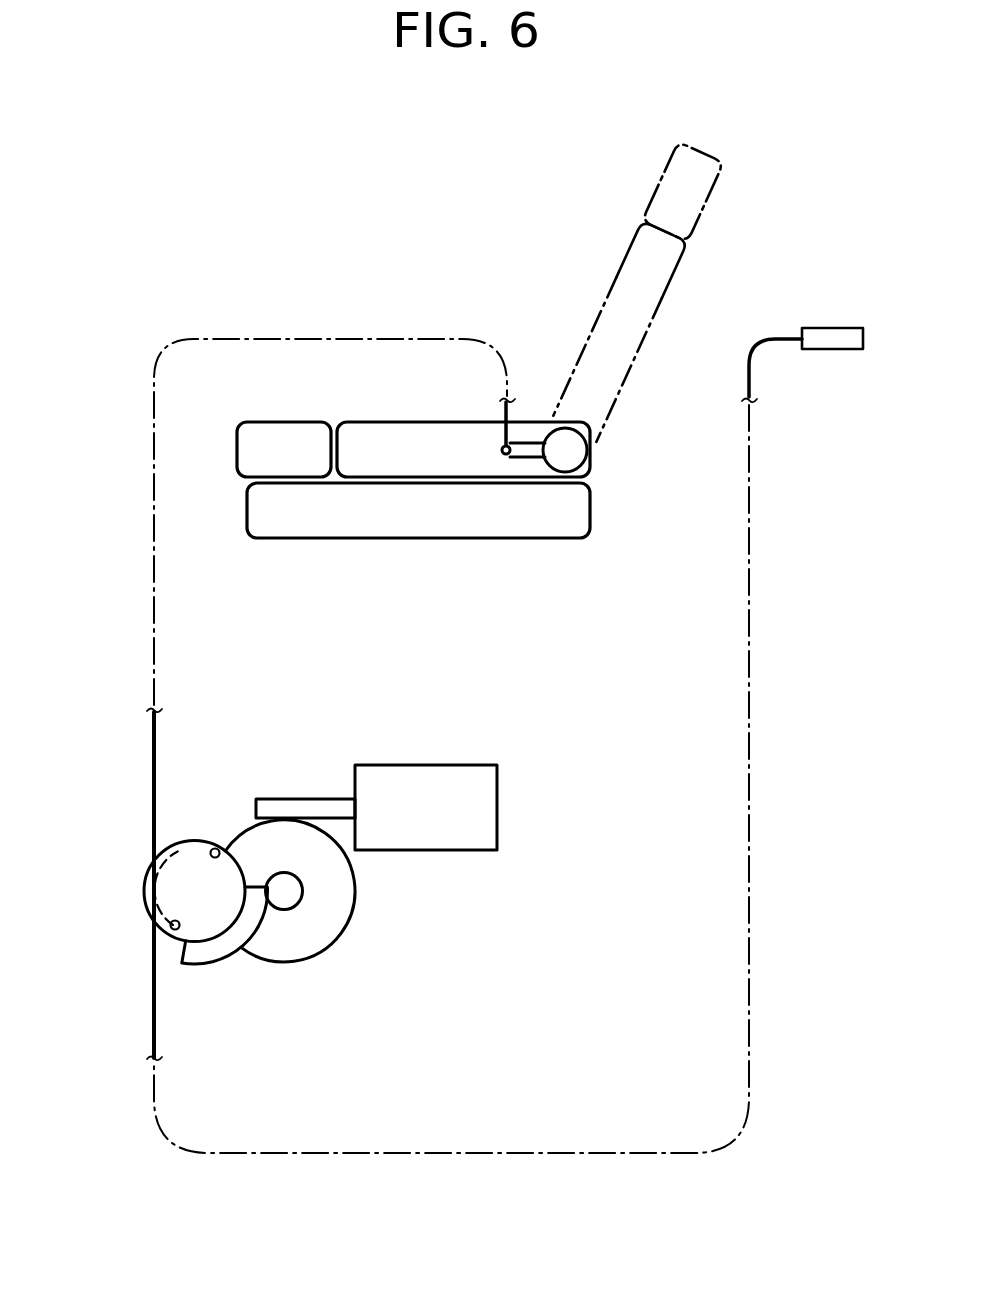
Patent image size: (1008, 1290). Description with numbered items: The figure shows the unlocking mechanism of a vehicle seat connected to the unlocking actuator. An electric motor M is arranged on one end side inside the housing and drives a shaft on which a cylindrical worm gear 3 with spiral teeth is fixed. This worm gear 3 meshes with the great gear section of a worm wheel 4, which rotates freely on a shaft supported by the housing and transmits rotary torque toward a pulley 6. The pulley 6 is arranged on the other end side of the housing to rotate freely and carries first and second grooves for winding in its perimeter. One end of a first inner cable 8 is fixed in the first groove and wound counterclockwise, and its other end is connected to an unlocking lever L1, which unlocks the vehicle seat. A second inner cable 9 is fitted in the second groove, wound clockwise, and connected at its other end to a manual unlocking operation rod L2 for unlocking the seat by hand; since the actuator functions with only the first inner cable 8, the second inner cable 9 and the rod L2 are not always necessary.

The worm gear 3 is at (310, 808).
The worm wheel 4 is at (303, 933).
The pulley 6 is at (193, 888).
The first inner cable 8 is at (154, 797).
The second inner cable 9 is at (154, 973).
The motor M is at (432, 822).
The unlocking lever L1 is at (528, 452).
The manual unlocking operation rod L2 is at (832, 339).